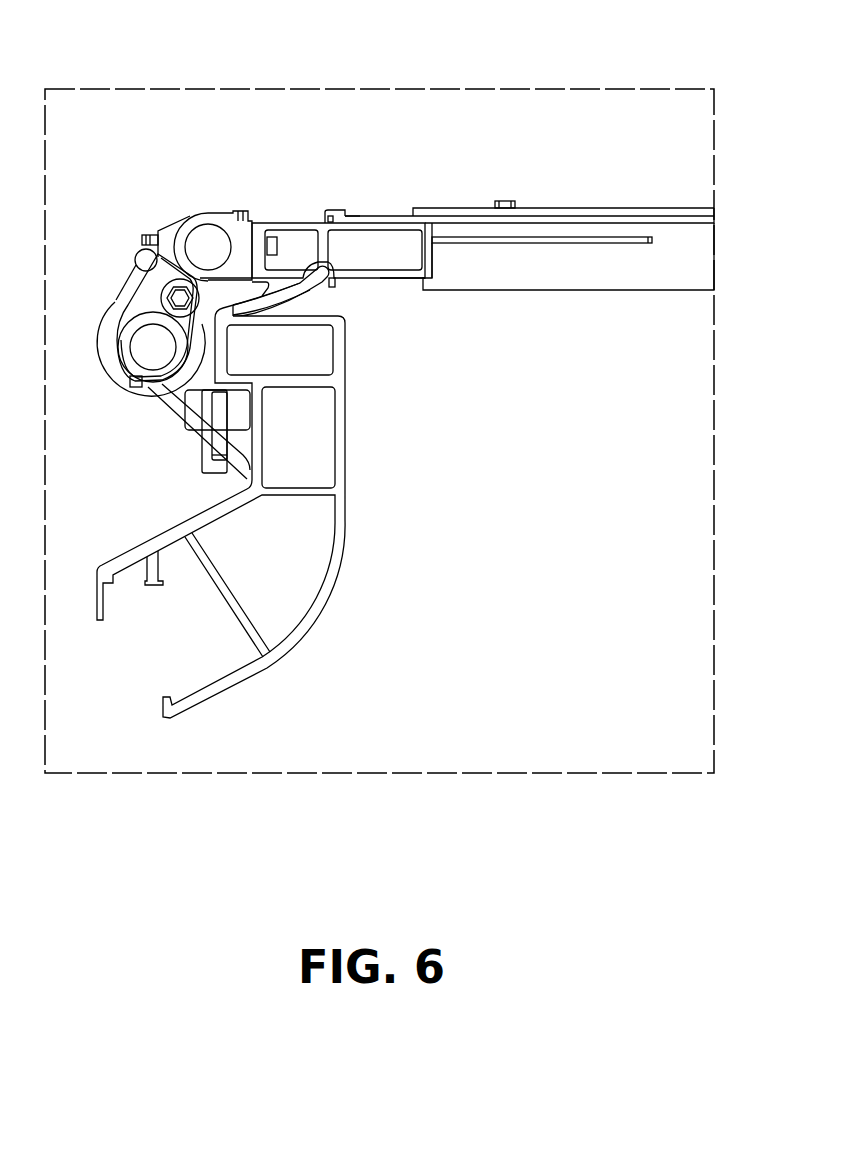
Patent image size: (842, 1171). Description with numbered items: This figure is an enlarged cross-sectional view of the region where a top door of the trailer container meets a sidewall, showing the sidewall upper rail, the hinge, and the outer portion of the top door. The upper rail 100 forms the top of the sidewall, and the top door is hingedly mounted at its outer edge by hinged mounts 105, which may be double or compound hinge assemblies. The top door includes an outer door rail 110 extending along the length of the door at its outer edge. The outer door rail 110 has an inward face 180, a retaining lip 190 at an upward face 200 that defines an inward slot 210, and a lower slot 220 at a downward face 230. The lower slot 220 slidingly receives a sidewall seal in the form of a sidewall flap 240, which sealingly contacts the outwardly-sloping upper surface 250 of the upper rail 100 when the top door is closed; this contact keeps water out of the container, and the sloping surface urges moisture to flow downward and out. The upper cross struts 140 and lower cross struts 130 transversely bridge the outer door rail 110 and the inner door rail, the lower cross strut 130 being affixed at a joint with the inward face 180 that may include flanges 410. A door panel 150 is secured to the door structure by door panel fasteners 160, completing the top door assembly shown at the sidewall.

The upper rail 100 is at (337, 587).
The hinged mounts 105 is at (163, 267).
The outer door rail 110 is at (262, 223).
The lower cross struts 130 is at (688, 272).
The upper cross struts 140 is at (583, 208).
The door panel 150 is at (672, 222).
The door panel fasteners 160 is at (503, 201).
The inward face 180 is at (437, 262).
The retaining lip 190 is at (325, 211).
The upward face 200 is at (291, 221).
The inward slot 210 is at (354, 212).
The lower slot 220 is at (316, 306).
The downward face 230 is at (397, 280).
The sidewall flap 240 is at (250, 322).
The outwardly-sloping upper surface 250 is at (251, 337).
The flanges 410 is at (617, 245).